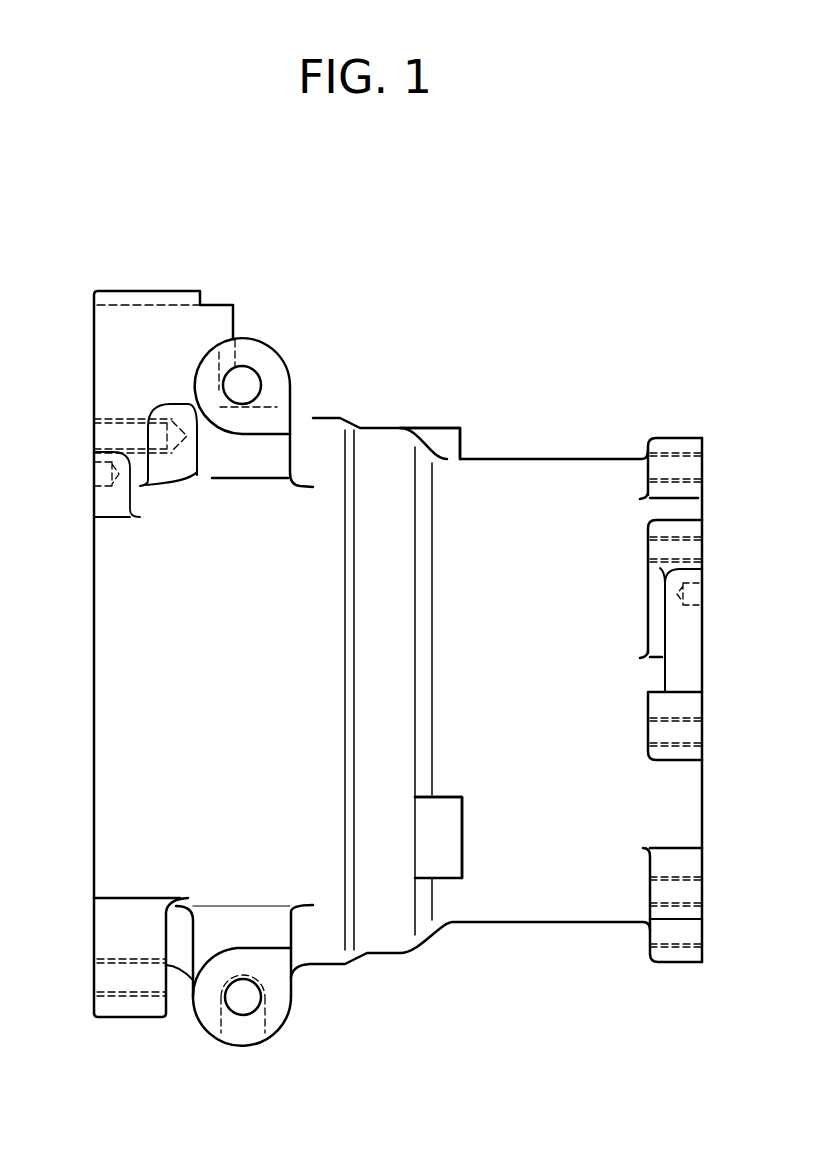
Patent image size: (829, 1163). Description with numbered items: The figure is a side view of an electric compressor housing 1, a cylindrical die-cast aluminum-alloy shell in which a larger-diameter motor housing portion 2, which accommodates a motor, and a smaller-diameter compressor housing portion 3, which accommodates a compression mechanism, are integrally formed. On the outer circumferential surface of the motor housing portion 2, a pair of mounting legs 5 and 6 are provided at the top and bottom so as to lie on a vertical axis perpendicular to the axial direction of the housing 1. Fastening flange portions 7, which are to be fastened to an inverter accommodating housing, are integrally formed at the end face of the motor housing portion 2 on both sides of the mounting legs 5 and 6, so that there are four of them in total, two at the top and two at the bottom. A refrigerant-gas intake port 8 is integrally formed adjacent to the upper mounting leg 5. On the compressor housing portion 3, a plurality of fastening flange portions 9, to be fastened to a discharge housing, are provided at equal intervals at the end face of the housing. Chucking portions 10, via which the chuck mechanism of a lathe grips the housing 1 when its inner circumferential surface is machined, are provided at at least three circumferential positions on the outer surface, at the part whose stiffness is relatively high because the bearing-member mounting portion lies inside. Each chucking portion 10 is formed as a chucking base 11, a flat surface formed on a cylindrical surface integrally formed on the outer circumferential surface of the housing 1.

The electric compressor housing 1 is at (375, 330).
The motor housing portion 2 is at (108, 679).
The compressor housing portion 3 is at (567, 897).
The mounting leg 5 is at (257, 363).
The mounting leg 6 is at (278, 1005).
The fastening flange portion 7 is at (117, 430).
The refrigerant-gas intake port 8 is at (177, 318).
The fastening flange portion 9 is at (683, 730).
The chucking portion 10 is at (473, 432).
The chucking base 11 is at (440, 427).